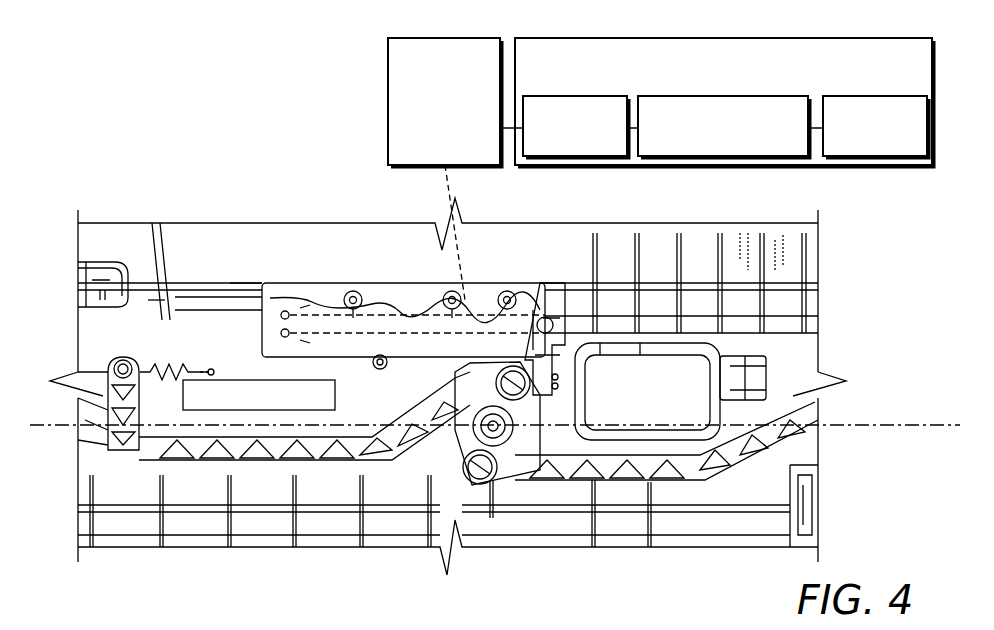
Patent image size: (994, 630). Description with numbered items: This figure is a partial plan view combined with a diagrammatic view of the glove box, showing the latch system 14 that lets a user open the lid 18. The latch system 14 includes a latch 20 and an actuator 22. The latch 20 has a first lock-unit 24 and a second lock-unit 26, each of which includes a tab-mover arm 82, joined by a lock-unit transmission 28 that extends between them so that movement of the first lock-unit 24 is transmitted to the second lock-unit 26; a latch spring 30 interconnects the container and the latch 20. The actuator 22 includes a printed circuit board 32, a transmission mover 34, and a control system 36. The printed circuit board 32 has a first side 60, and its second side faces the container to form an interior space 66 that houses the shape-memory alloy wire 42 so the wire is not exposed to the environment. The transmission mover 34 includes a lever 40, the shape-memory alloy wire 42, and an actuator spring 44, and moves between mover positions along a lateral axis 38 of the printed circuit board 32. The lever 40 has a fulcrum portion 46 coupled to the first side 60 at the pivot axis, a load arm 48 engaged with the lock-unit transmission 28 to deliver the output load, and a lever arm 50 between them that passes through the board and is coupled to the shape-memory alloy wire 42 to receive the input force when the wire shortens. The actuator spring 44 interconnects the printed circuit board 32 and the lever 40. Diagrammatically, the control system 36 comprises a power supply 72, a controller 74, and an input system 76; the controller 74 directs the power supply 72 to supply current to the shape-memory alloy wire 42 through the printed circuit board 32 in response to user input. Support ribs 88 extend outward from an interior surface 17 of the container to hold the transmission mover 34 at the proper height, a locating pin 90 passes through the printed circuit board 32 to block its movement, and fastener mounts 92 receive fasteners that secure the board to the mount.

The latch system 14 is at (127, 139).
The interior surface 17 is at (193, 323).
The lid 18 is at (157, 272).
The latch 20 is at (140, 482).
The actuator 22 is at (738, 275).
The first lock-unit 24 is at (217, 463).
The second lock-unit 26 is at (643, 485).
The lock-unit transmission 28 is at (453, 448).
The latch spring 30 is at (163, 360).
The printed circuit board 32 is at (268, 280).
The transmission mover 34 is at (687, 270).
The control system 36 is at (563, 38).
The lateral axis 38 is at (48, 393).
The lever 40 is at (643, 343).
The shape-memory alloy wire 42 is at (440, 38).
The actuator spring 44 is at (567, 283).
The fulcrum portion 46 is at (572, 296).
The load arm 48 is at (545, 272).
The lever arm 50 is at (564, 377).
The first side 60 is at (293, 283).
The interior space 66 is at (328, 283).
The power supply 72 is at (572, 96).
The controller 74 is at (727, 96).
The input system 76 is at (884, 96).
The tab-mover arm 82 is at (350, 163).
The support ribs 88 is at (433, 307).
The locating pin 90 is at (442, 277).
The fastener mounts 92 is at (348, 283).